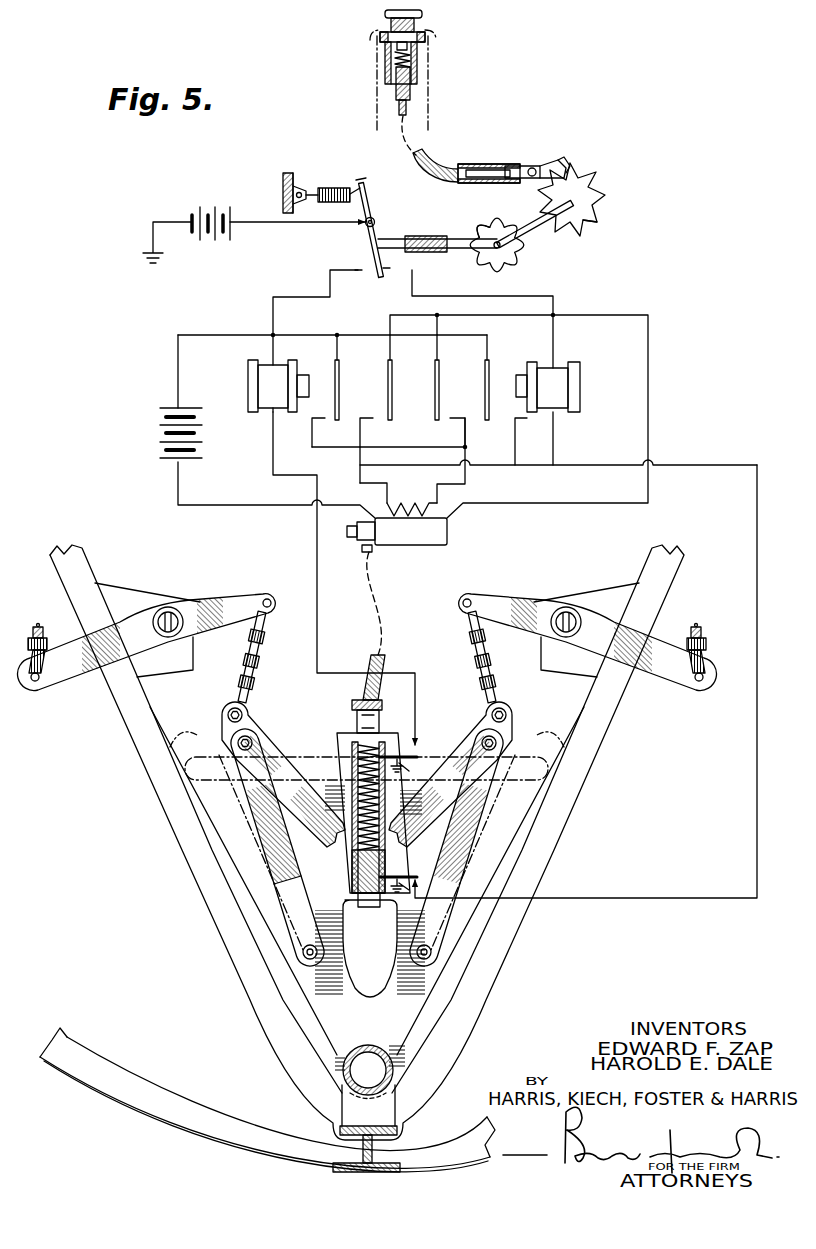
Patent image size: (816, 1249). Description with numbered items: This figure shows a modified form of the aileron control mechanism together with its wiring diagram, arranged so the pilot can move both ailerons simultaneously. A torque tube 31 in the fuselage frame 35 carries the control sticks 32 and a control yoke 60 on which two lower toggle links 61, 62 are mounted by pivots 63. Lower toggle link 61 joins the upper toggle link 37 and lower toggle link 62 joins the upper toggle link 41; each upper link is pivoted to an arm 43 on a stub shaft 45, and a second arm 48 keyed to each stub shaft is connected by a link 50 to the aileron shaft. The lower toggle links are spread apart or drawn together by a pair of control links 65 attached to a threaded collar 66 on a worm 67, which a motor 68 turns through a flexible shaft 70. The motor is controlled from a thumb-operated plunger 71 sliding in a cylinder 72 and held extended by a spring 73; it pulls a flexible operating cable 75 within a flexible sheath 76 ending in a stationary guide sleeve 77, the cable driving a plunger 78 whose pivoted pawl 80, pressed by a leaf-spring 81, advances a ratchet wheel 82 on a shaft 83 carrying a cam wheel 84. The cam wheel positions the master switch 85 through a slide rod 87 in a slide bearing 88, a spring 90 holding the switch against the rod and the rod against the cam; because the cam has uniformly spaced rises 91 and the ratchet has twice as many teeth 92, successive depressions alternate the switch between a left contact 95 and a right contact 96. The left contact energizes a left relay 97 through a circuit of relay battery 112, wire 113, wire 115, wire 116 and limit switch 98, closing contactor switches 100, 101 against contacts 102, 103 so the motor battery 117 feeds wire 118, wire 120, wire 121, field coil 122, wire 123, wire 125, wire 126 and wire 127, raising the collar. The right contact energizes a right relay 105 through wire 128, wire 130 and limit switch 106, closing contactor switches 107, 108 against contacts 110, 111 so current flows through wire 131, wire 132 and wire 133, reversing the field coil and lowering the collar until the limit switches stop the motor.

The torque tube 31 is at (345, 1071).
The control sticks 32 is at (376, 98).
The fuselage frame 35 is at (508, 919).
The upper toggle link 37 is at (243, 672).
The upper toggle link 41 is at (492, 666).
The arm 43 is at (218, 600).
The stub shaft 45 is at (165, 608).
The second arm 48 is at (80, 672).
The link 50 is at (38, 625).
The control yoke 60 is at (336, 1000).
The lower toggle link 61 is at (263, 832).
The lower toggle link 62 is at (503, 733).
The pivots 63 is at (303, 955).
The control links 65 is at (250, 785).
The threaded collar 66 is at (303, 884).
The worm 67 is at (357, 768).
The motor 68 is at (412, 552).
The flexible shaft 70 is at (380, 657).
The thumb-operated plunger 71 is at (386, 16).
The cylinder 72 is at (391, 52).
The spring 73 is at (407, 53).
The flexible operating cable 75 is at (408, 111).
The flexible sheath 76 is at (436, 170).
The stationary guide sleeve 77 is at (482, 166).
The plunger 78 is at (514, 166).
The pawl 80 is at (566, 165).
The leaf-spring 81 is at (550, 162).
The ratchet wheel 82 is at (598, 192).
The shaft 83 is at (585, 215).
The cam wheel 84 is at (512, 268).
The master switch 85 is at (381, 216).
The slide rod 87 is at (410, 238).
The slide bearing 88 is at (441, 236).
The spring 90 is at (335, 188).
The rises 91 is at (525, 254).
The teeth 92 is at (600, 206).
The left contact 95 is at (359, 268).
The right contact 96 is at (386, 270).
The left relay 97 is at (262, 376).
The limit switch 98 is at (420, 752).
The contactor switch 100 is at (334, 372).
The contactor switch 101 is at (387, 374).
The contact 102 is at (323, 417).
The contact 103 is at (372, 418).
The right relay 105 is at (566, 374).
The limit switch 106 is at (467, 871).
The contactor switch 107 is at (434, 372).
The contactor switch 108 is at (484, 374).
The contact 110 is at (448, 417).
The contact 111 is at (506, 418).
The relay battery 112 is at (209, 206).
The wire 113 is at (259, 222).
The wire 115 is at (278, 296).
The wire 116 is at (317, 532).
The motor battery 117 is at (158, 432).
The wire 118 is at (208, 335).
The wire 120 is at (401, 447).
The wire 121 is at (467, 484).
The field coil 122 is at (410, 503).
The wire 123 is at (361, 485).
The wire 125 is at (360, 463).
The wire 126 is at (393, 311).
The wire 127 is at (222, 505).
The wire 128 is at (553, 328).
The wire 130 is at (598, 465).
The wire 131 is at (520, 466).
The wire 132 is at (466, 433).
The wire 133 is at (437, 318).